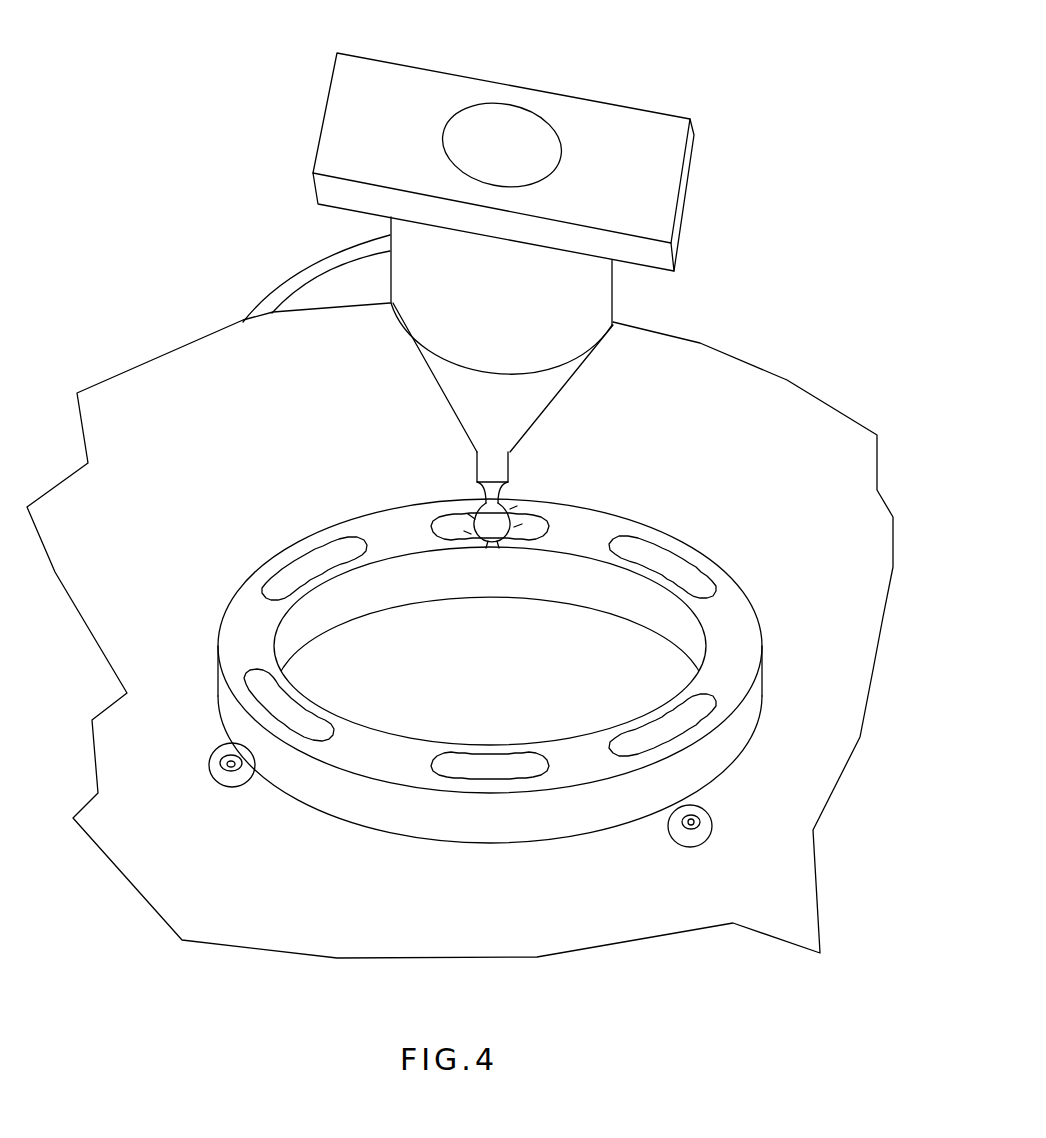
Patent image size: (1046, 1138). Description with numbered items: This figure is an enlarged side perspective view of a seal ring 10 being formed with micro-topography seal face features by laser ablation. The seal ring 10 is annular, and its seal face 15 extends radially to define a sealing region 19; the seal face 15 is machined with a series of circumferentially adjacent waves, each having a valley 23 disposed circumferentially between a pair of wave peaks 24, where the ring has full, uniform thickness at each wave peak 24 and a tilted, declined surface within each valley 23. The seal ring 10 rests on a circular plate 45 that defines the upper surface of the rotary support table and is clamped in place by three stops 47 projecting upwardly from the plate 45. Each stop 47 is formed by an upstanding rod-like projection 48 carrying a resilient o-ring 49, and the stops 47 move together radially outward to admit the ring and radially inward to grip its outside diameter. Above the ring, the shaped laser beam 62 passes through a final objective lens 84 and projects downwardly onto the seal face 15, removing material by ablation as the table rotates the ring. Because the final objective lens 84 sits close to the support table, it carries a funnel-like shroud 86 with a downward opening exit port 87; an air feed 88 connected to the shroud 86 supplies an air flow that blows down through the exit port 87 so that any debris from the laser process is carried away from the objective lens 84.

The seal ring 10 is at (475, 624).
The seal face 15 is at (367, 527).
The sealing region 19 is at (237, 635).
The valley 23 is at (527, 520).
The wave peaks 24 is at (580, 530).
The circular plate 45 is at (720, 375).
The stops 47 is at (230, 790).
The rod-like projection 48 is at (217, 772).
The resilient o-ring 49 is at (250, 785).
The laser beam 62 is at (503, 497).
The final objective lens 84 is at (625, 123).
The funnel-like shroud 86 is at (585, 277).
The exit port 87 is at (483, 467).
The air feed 88 is at (308, 265).